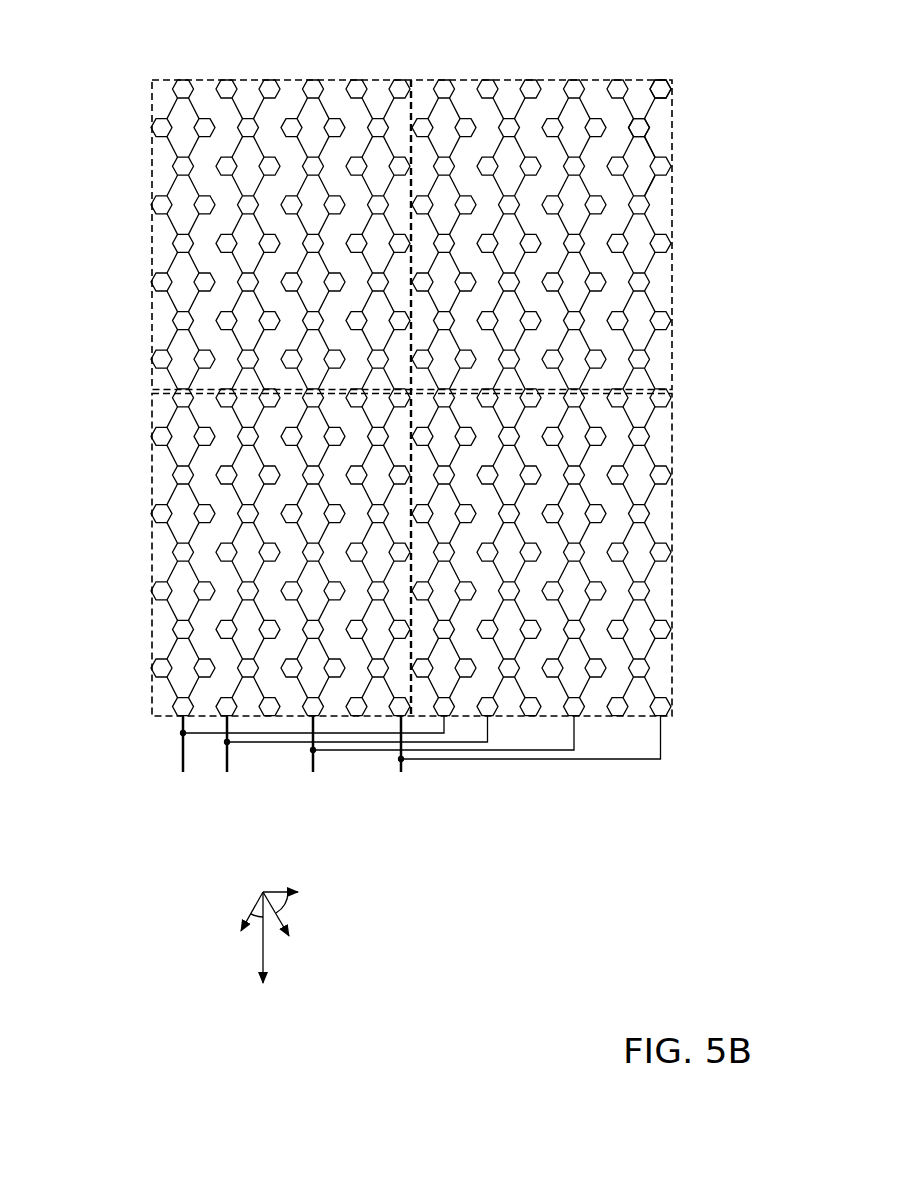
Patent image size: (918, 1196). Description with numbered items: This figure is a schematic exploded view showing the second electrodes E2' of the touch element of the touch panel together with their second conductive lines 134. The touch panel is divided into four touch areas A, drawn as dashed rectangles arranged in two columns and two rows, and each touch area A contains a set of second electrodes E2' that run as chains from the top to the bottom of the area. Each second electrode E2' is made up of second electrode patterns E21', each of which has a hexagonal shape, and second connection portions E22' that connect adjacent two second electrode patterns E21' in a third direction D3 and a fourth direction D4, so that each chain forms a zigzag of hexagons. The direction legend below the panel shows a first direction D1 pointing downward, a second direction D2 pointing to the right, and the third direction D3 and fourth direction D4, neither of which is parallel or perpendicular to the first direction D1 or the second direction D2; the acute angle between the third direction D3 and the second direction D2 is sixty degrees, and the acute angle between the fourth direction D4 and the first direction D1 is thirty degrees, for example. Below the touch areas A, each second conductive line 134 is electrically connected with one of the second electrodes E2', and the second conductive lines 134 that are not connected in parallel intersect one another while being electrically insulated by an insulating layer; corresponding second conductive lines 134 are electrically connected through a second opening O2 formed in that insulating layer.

The second electrode E2' is at (411, 365).
The second electrode pattern E21' is at (683, 109).
The second connection portion E22' is at (691, 167).
The second conductive line 134 is at (538, 761).
The second opening O2 is at (405, 765).
The touch area A is at (150, 83).
The first direction D1 is at (270, 962).
The second direction D2 is at (373, 893).
The third direction D3 is at (356, 934).
The fourth direction D4 is at (168, 928).